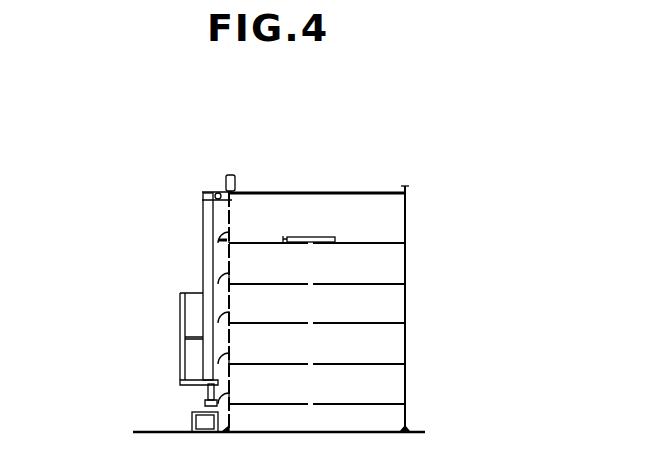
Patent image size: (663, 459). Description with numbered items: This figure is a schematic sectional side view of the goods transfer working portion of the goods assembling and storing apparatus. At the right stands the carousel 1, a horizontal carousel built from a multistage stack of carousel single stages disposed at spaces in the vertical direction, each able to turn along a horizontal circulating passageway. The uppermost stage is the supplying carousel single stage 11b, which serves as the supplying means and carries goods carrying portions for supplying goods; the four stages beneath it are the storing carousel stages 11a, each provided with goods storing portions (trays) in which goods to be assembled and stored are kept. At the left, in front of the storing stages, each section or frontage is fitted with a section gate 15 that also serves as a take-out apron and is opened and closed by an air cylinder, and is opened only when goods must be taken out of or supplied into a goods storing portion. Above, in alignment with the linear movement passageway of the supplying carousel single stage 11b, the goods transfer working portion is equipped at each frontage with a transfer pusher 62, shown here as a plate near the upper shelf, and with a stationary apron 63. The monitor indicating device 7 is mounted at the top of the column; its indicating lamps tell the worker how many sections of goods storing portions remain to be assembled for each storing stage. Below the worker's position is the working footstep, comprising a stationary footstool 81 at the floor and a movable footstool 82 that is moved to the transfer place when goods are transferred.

The carousel 1 is at (355, 212).
The monitor indicating device 7 is at (225, 180).
The storing carousel stage 11a is at (385, 274).
The supplying carousel single stage 11b is at (385, 236).
The section gate 15 is at (218, 295).
The transfer pusher 62 is at (305, 238).
The stationary apron 63 is at (218, 242).
The stationary footstool 81 is at (192, 420).
The movable footstool 82 is at (184, 350).